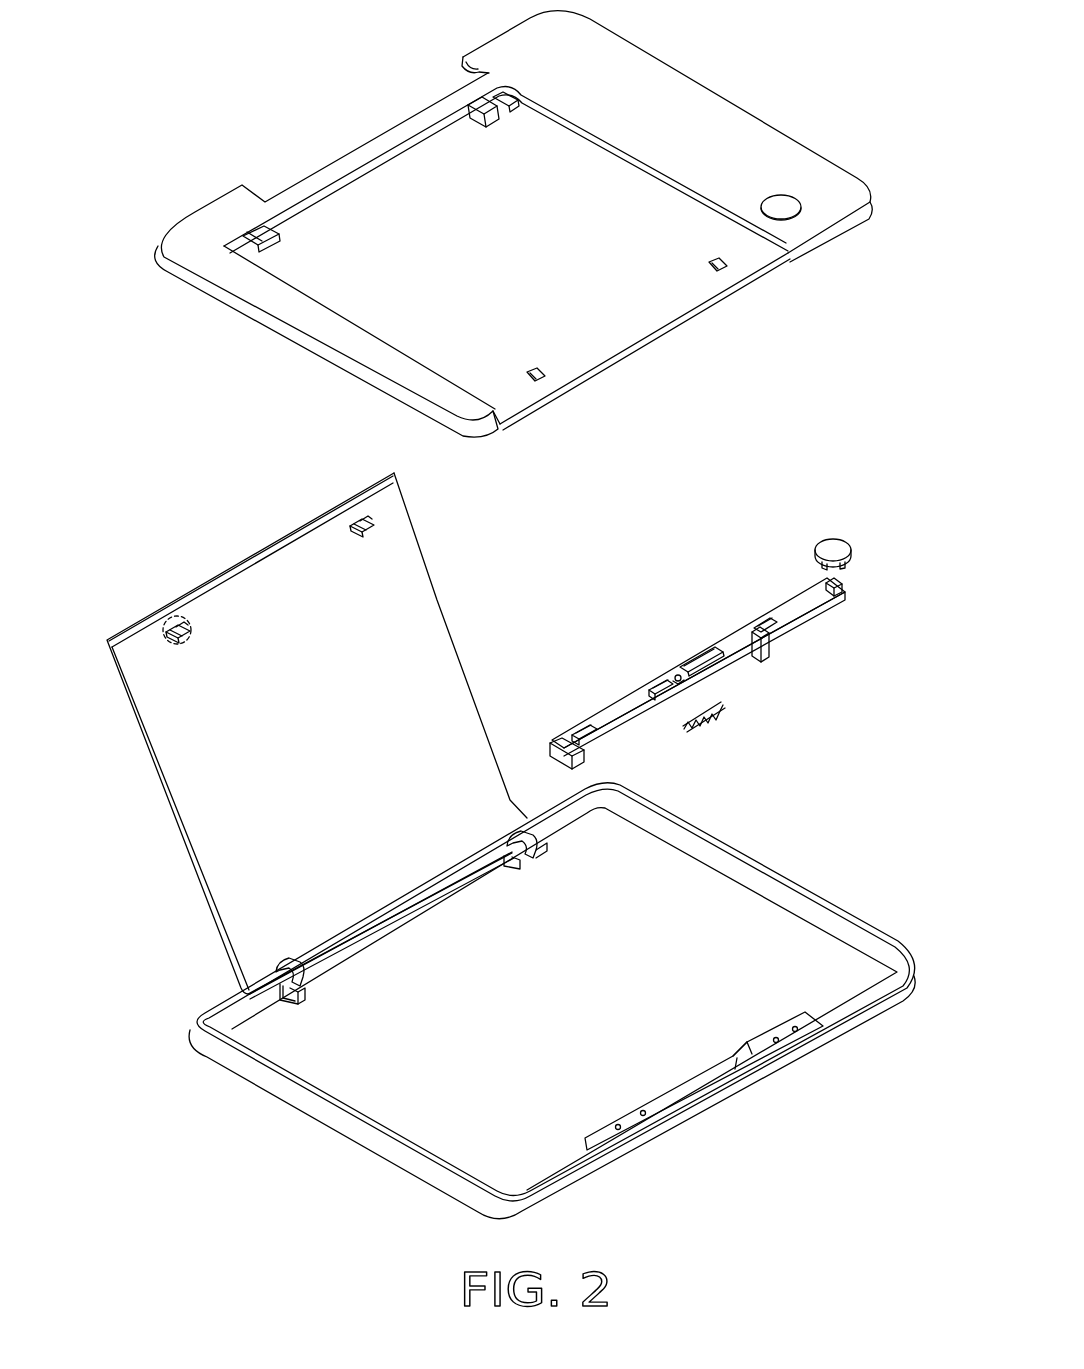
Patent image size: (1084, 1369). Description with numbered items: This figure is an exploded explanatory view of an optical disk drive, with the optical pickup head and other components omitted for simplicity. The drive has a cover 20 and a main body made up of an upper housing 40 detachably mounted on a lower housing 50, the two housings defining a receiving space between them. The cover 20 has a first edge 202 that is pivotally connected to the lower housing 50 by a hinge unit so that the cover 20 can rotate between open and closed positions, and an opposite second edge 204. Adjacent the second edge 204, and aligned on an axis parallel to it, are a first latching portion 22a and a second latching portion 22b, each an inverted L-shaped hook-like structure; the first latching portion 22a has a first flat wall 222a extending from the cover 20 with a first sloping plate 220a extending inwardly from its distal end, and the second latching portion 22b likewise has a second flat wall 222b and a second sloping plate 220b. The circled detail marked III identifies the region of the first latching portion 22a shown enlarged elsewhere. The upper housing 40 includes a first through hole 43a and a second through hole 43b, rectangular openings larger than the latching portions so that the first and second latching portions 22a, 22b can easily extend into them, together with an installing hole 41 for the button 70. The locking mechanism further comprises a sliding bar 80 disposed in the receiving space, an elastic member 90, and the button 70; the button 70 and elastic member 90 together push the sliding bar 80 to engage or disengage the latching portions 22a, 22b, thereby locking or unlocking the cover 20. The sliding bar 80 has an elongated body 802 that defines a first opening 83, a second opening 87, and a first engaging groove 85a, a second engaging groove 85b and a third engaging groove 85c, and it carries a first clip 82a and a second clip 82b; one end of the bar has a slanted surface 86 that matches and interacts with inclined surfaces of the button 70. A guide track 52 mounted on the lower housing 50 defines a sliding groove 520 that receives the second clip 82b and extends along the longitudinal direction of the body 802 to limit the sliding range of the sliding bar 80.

The cover 20 is at (298, 751).
The first edge 202 is at (368, 933).
The second edge 204 is at (262, 548).
The first latching portion 22a is at (156, 640).
The second latching portion 22b is at (368, 504).
The first sloping plate 220a is at (163, 637).
The second sloping plate 220b is at (365, 525).
The first flat wall 222a is at (173, 632).
The second flat wall 222b is at (355, 522).
The detail view indicator III is at (183, 642).
The upper housing 40 is at (514, 246).
The installing hole 41 is at (781, 212).
The first through hole 43a is at (543, 379).
The second through hole 43b is at (725, 275).
The lower housing 50 is at (552, 1001).
The guide track 52 is at (718, 1075).
The sliding groove 520 is at (753, 1050).
The button 70 is at (830, 550).
The sliding bar 80 is at (703, 640).
The elongated body 802 is at (807, 603).
The first clip 82a is at (583, 758).
The second clip 82b is at (767, 655).
The first opening 83 is at (677, 677).
The first engaging groove 85a is at (573, 730).
The second engaging groove 85b is at (647, 688).
The third engaging groove 85c is at (760, 625).
The slanted surface 86 is at (840, 583).
The second opening 87 is at (707, 663).
The elastic member 90 is at (703, 720).